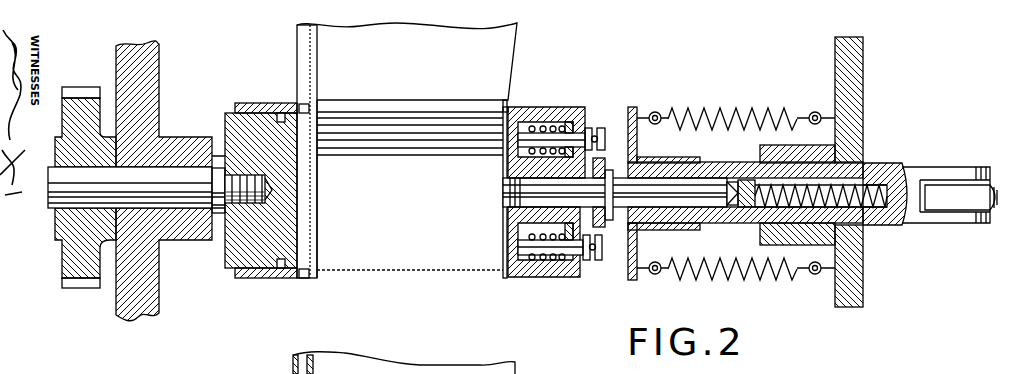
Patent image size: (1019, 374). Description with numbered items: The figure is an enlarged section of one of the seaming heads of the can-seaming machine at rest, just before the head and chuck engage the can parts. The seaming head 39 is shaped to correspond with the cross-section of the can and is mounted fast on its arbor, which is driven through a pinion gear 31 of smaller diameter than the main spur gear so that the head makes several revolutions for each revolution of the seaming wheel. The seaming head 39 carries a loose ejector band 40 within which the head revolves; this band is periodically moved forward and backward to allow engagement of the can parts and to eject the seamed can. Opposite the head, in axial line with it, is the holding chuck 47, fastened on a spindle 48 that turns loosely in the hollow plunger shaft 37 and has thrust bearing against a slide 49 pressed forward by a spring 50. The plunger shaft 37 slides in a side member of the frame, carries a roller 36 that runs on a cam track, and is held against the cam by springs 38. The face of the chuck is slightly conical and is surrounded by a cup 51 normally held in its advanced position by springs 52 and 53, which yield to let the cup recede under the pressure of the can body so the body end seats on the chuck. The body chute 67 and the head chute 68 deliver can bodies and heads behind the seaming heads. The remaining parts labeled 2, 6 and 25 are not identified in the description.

The shaft 2 is at (67, 188).
The drum body 6 is at (318, 238).
The frame plate 25 is at (143, 295).
The pinion gear 31 is at (60, 255).
The roller 36 is at (958, 198).
The plunger shaft 37 is at (880, 225).
The spring 38 is at (738, 108).
The seaming head 39 is at (237, 243).
The ejector band 40 is at (262, 280).
The holding chuck 47 is at (502, 224).
The spindle 48 is at (677, 188).
The slide 49 is at (748, 212).
The spring 50 is at (790, 215).
The cup 51 is at (528, 105).
The spring 52 is at (558, 125).
The spring 53 is at (603, 127).
The body chute 67 is at (405, 198).
The head chute 68 is at (306, 50).